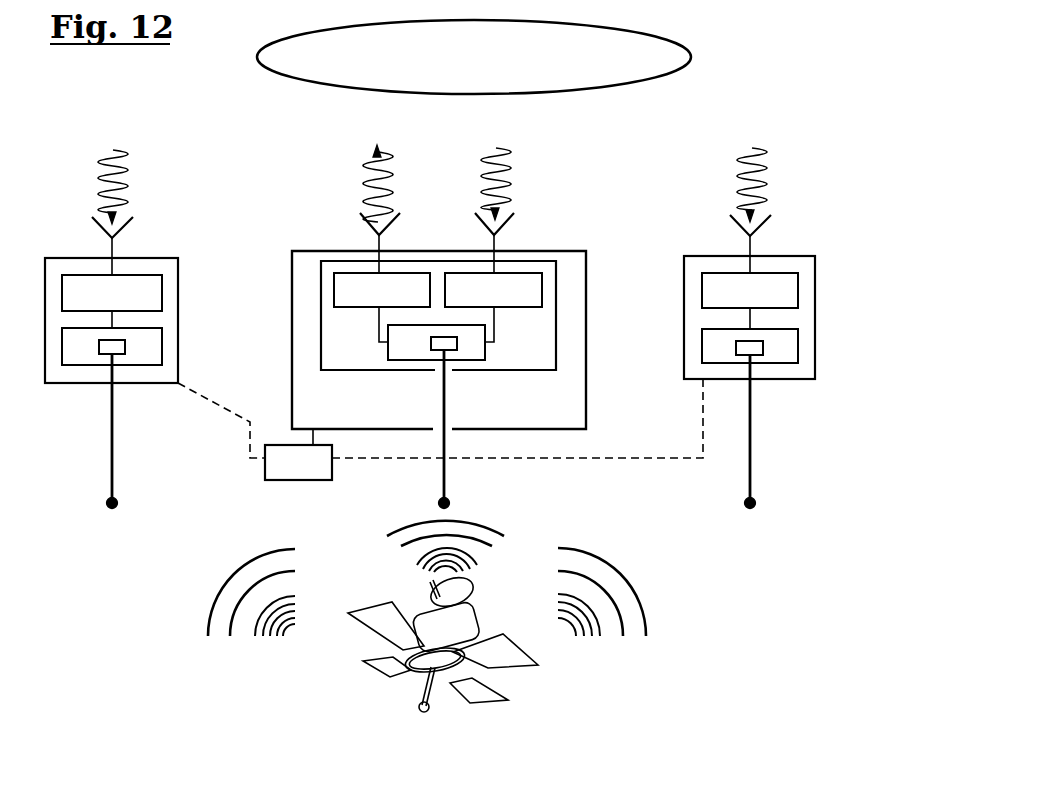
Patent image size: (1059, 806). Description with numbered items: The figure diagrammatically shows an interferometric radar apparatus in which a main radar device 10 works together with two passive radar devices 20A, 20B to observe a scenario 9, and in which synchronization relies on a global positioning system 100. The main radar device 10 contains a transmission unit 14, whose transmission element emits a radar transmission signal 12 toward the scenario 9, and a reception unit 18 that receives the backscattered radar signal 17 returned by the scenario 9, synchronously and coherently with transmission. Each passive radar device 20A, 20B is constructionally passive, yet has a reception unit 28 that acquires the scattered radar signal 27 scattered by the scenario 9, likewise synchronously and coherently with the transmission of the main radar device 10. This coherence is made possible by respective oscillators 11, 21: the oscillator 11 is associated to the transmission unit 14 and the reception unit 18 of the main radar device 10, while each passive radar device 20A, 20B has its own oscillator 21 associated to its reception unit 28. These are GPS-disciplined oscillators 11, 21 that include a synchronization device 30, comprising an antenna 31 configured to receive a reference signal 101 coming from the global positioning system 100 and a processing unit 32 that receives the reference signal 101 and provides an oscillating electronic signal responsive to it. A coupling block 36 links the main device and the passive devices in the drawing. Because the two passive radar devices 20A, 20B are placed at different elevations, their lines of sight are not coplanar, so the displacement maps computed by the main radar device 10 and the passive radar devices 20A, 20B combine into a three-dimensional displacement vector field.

The scenario 9 is at (283, 78).
The main radar device 10 is at (573, 243).
The oscillator 11 is at (493, 358).
The radar transmission signal 12 is at (362, 190).
The transmission unit 14 is at (352, 308).
The backscattered radar signal 17 is at (480, 190).
The reception unit 18 is at (541, 295).
The first passive radar device 20A is at (162, 258).
The second passive radar device 20B is at (797, 255).
The oscillator 21 is at (168, 352).
The scattered radar signal 27 is at (96, 195).
The reception unit 28 is at (162, 297).
The synchronization device 30 is at (118, 422).
The antenna 31 is at (115, 470).
The processing unit 32 is at (124, 355).
The coupling unit 36 is at (333, 470).
The global positioning system 100 is at (348, 653).
The reference signal 101 is at (208, 615).